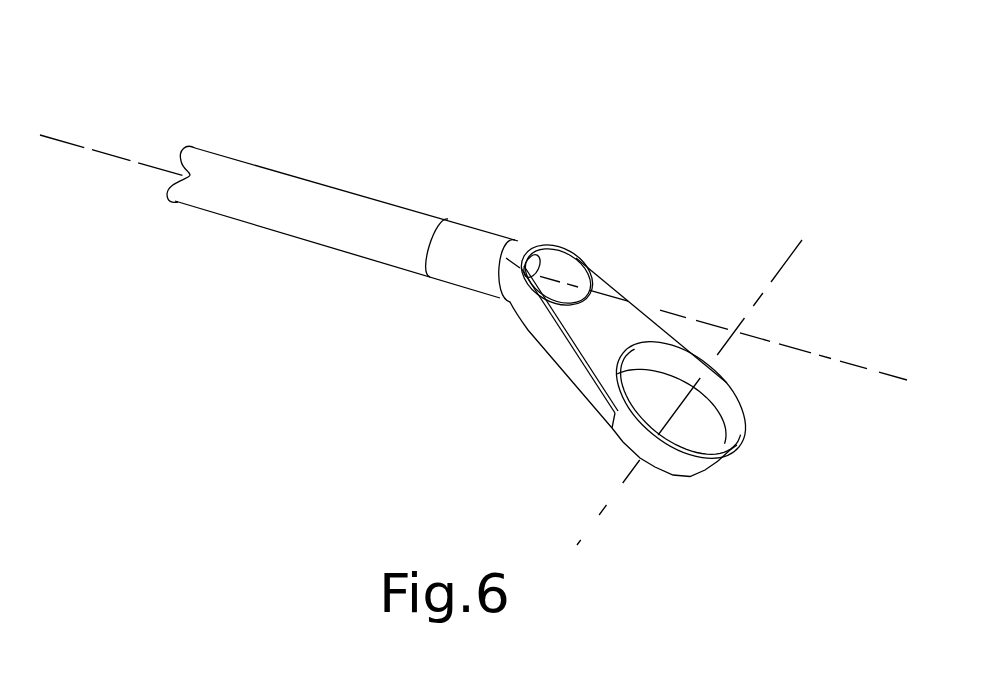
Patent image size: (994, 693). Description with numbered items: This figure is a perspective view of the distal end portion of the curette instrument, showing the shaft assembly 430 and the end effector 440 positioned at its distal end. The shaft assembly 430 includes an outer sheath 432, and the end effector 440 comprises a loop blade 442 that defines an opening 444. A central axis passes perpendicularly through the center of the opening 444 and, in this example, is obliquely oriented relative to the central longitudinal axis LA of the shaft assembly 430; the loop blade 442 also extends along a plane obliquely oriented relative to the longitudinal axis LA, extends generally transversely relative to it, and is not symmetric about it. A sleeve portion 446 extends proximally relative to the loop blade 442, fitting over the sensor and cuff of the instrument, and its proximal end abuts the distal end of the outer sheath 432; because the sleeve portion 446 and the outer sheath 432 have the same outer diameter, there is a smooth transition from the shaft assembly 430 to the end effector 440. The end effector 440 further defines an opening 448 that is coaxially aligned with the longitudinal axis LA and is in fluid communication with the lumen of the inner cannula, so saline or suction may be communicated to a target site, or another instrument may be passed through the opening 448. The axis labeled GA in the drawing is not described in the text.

The shaft assembly 430 is at (487, 285).
The outer sheath 432 is at (322, 197).
The end effector 440 is at (640, 285).
The loop blade 442 is at (700, 475).
The opening 444 is at (728, 421).
The sleeve portion 446 is at (486, 241).
The opening 448 is at (582, 254).
The central longitudinal axis LA is at (80, 145).
The guide axis GA is at (784, 266).